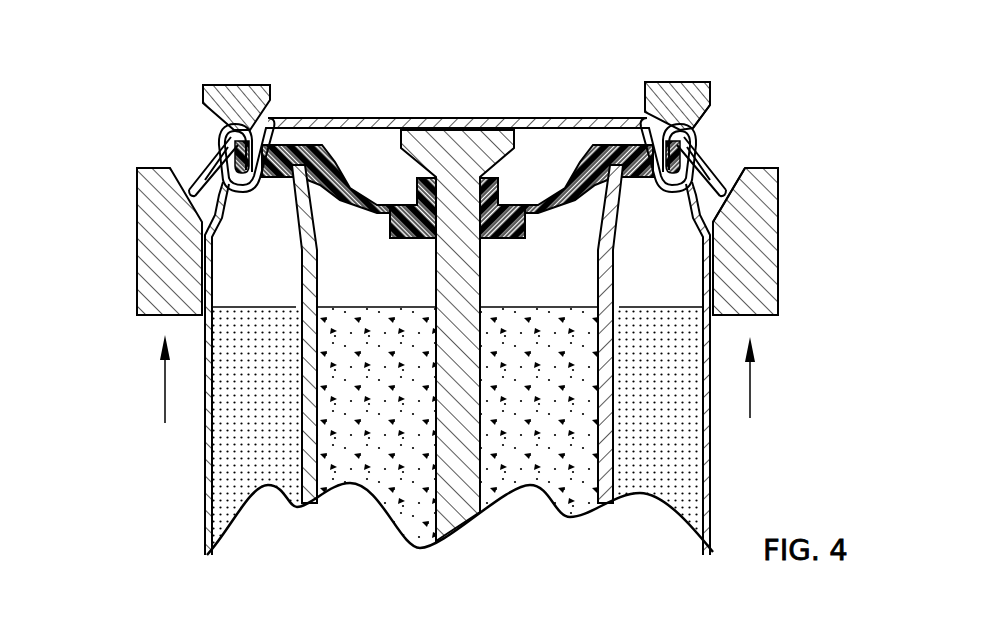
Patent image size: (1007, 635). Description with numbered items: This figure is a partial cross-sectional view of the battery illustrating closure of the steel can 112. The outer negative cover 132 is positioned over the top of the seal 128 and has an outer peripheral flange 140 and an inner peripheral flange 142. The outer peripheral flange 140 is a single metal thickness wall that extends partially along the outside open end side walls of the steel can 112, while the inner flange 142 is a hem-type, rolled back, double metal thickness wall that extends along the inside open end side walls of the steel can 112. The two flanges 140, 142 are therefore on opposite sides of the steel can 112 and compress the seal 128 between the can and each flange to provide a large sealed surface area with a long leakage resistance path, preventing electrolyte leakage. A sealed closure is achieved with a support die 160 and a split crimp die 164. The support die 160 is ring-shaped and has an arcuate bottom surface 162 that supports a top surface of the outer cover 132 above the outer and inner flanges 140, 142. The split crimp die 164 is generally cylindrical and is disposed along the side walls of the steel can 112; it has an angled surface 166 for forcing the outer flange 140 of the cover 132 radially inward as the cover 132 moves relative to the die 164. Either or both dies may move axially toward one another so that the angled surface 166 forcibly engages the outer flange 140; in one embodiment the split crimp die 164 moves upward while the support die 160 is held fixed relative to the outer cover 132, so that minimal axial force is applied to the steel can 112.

The steel can 112 is at (713, 437).
The seal 128 is at (578, 172).
The outer negative cover 132 is at (372, 117).
The outer peripheral flange 140 is at (708, 163).
The inner peripheral flange 142 is at (665, 140).
The support die 160 is at (668, 87).
The arcuate bottom surface 162 is at (683, 127).
The split crimp die 164 is at (765, 272).
The angled surface 166 is at (733, 218).